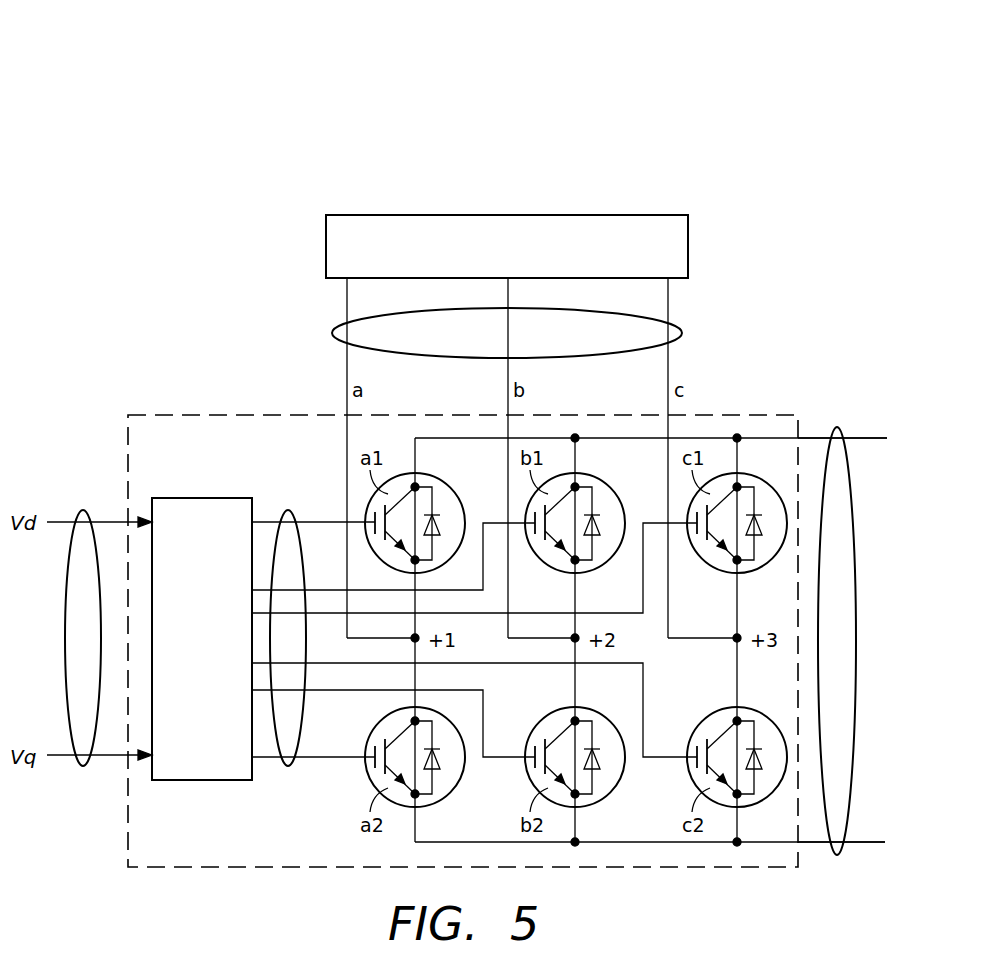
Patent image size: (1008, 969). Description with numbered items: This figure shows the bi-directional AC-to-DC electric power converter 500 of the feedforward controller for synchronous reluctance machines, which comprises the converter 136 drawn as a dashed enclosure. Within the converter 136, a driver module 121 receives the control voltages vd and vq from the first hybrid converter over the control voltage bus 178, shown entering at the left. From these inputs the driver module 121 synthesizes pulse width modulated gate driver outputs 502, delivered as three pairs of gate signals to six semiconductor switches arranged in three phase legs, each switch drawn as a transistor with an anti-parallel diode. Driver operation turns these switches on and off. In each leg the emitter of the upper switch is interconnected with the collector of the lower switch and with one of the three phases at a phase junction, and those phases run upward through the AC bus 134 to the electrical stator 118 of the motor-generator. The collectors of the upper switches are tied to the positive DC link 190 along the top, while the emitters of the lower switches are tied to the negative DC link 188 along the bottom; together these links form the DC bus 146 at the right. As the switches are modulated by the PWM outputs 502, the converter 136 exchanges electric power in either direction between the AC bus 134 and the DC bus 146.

The bi-directional AC-to-DC electric power converter 500 is at (133, 240).
The electrical stator 118 is at (529, 260).
The AC bus 134 is at (682, 332).
The converter 136 is at (160, 412).
The driver module 121 is at (174, 498).
The control voltage bus 178 is at (75, 512).
The PWM gate driver outputs 502 is at (282, 512).
The DC bus 146 is at (836, 428).
The positive DC link 190 is at (876, 438).
The negative DC link 188 is at (874, 842).